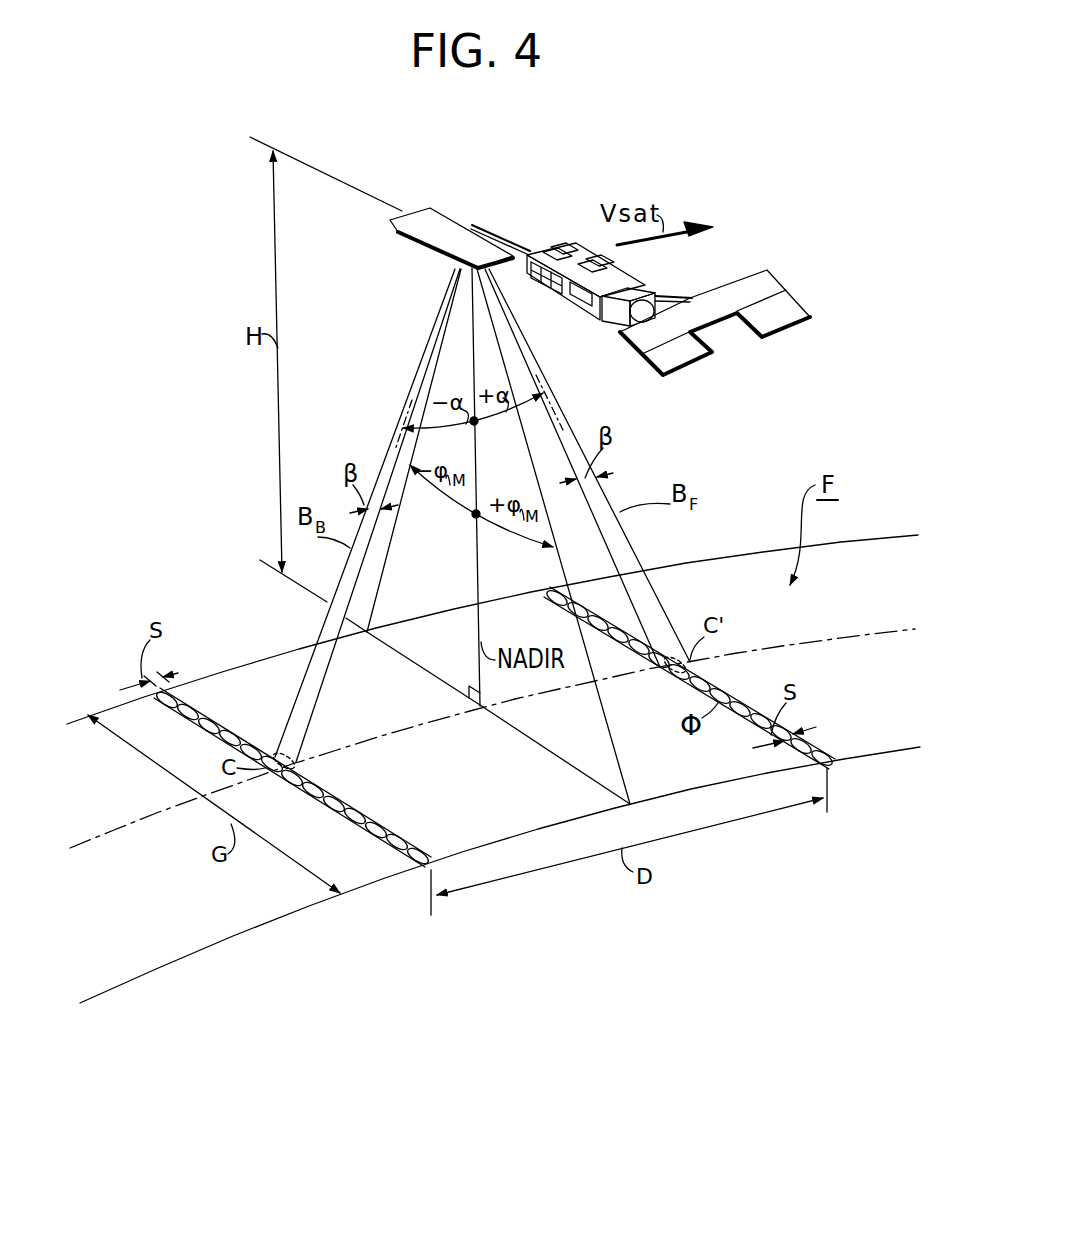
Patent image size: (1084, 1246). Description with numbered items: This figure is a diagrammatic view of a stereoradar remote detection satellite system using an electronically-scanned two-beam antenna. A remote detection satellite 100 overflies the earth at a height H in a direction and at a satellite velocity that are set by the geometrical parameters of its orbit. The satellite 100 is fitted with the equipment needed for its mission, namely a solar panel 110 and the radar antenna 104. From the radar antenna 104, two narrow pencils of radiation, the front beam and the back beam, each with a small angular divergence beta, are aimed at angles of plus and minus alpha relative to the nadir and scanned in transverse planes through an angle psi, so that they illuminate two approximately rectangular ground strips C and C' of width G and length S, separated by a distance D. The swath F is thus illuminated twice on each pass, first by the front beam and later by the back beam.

The remote detection satellite 100 is at (558, 253).
The radar antenna 104 is at (446, 230).
The solar panel 110 is at (770, 285).